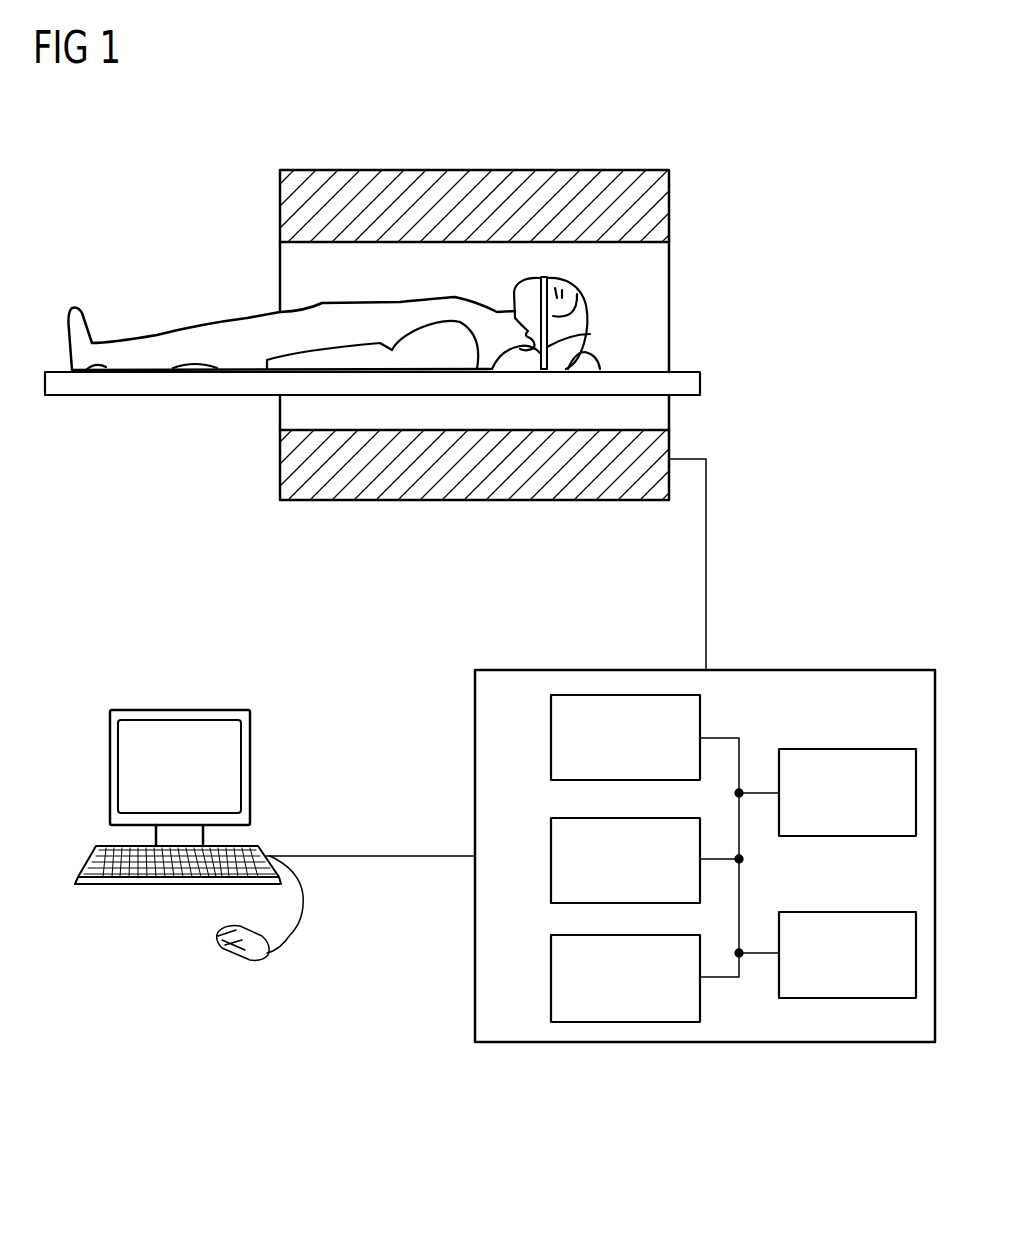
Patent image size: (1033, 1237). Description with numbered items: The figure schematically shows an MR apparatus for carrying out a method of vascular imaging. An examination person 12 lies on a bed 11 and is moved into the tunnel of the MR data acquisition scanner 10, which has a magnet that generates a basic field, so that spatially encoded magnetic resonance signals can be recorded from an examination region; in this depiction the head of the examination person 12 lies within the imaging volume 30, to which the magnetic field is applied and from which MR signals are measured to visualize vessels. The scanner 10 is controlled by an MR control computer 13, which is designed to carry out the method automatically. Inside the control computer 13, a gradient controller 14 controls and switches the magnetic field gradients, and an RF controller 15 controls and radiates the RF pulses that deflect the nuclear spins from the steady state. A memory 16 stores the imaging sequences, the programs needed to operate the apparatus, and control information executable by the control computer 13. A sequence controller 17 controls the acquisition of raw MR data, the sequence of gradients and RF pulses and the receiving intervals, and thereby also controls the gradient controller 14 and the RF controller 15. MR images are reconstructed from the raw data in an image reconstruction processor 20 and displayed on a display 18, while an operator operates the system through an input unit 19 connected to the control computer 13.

The MR data acquisition scanner 10 is at (480, 170).
The bed 11 is at (55, 372).
The examination person 12 is at (68, 306).
The imaging volume 30 is at (586, 334).
The MR control computer 13 is at (790, 670).
The gradient controller 14 is at (551, 738).
The RF controller 15 is at (551, 862).
The memory 16 is at (848, 749).
The sequence controller 17 is at (551, 980).
The display 18 is at (180, 710).
The input unit 19 is at (180, 884).
The image reconstruction processor 20 is at (850, 912).